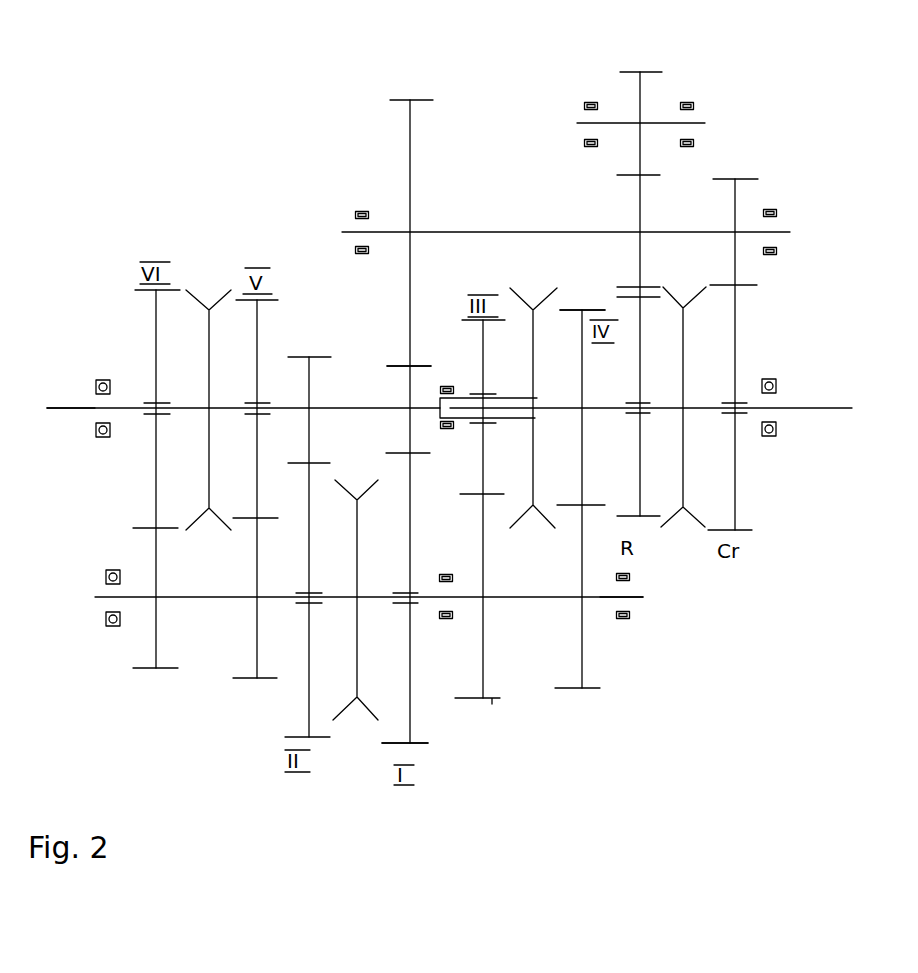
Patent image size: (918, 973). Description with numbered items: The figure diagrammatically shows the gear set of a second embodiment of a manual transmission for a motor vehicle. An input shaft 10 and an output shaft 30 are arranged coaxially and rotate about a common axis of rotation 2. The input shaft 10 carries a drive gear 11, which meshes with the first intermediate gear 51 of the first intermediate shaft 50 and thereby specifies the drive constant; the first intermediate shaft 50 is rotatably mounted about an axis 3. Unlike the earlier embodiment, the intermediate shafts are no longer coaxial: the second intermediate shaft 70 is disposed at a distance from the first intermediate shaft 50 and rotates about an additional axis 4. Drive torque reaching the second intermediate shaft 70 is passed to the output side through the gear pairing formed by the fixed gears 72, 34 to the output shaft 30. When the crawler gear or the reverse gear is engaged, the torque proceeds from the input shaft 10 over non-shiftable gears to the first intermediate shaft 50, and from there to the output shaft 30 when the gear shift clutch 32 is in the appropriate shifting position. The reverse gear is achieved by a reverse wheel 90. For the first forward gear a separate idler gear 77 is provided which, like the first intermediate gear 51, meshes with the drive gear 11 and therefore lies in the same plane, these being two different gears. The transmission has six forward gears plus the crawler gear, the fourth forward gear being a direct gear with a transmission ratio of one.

The axis of rotation 2 is at (88, 415).
The axis 3 is at (388, 225).
The additional axis 4 is at (143, 600).
The input shaft 10 is at (66, 405).
The drive gear 11 is at (392, 365).
The output shaft 30 is at (830, 410).
The gear shift clutch 32 is at (695, 523).
The fixed gear 34 is at (583, 305).
The first intermediate shaft 50 is at (783, 232).
The first intermediate gear 51 is at (430, 98).
The second intermediate shaft 70 is at (643, 597).
The fixed gear 72 is at (582, 690).
The idler gear 77 is at (420, 745).
The reverse wheel 90 is at (648, 70).